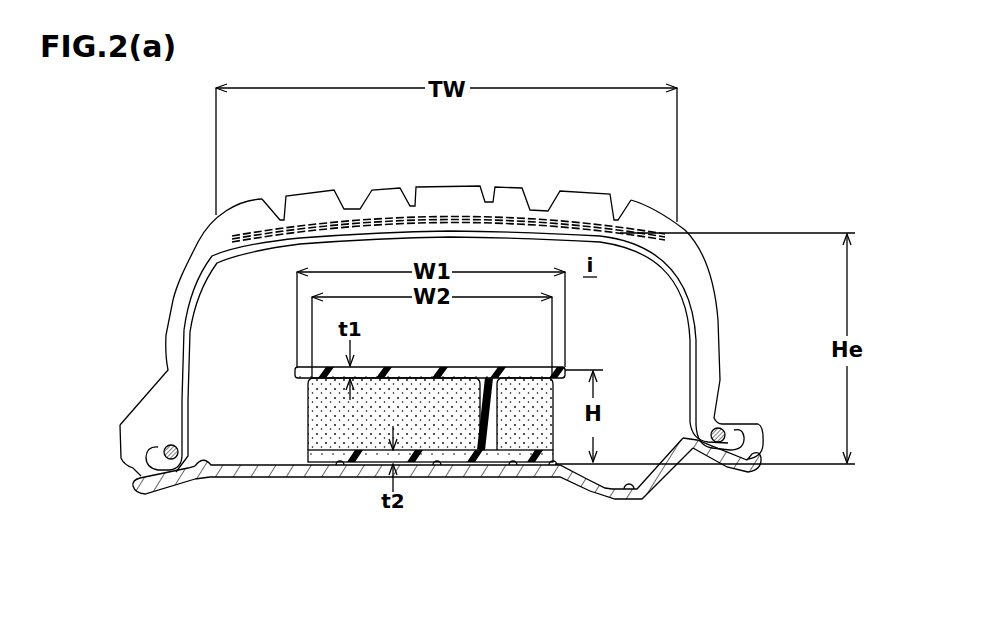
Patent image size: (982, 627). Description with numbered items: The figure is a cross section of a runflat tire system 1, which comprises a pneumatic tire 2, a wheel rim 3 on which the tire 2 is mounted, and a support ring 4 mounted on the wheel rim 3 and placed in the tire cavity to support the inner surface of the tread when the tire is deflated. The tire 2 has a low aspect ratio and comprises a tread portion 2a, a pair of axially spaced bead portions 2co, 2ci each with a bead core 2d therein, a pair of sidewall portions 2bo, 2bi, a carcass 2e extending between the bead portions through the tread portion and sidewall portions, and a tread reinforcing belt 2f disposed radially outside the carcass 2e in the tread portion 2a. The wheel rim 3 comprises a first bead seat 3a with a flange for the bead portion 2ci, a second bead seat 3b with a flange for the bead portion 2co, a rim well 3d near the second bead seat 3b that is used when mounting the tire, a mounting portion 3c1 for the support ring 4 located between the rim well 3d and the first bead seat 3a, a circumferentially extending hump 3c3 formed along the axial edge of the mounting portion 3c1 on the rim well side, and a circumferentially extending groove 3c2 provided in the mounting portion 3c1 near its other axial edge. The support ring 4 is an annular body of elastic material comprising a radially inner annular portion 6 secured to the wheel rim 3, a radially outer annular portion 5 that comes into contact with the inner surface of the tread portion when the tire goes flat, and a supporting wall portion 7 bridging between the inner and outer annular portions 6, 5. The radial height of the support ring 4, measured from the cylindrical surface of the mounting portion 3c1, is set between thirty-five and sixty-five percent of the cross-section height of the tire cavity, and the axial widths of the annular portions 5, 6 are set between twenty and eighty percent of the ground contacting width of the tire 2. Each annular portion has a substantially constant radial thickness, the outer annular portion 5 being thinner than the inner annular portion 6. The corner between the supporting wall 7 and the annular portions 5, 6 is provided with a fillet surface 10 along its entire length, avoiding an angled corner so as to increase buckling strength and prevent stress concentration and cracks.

The runflat tire system 1 is at (692, 213).
The pneumatic tire 2 is at (718, 222).
The tread portion 2a is at (455, 180).
The sidewall portion 2bi is at (162, 306).
The sidewall portion 2bo is at (736, 320).
The bead portion 2ci is at (115, 446).
The bead portion 2co is at (768, 431).
The bead core 2d is at (165, 446).
The carcass 2e is at (207, 272).
The tread reinforcing belt 2f is at (313, 232).
The wheel rim 3 is at (666, 486).
The first bead seat 3a is at (170, 496).
The second bead seat 3b is at (722, 476).
The mounting portion 3c1 is at (437, 464).
The circumferentially extending groove 3c2 is at (367, 465).
The circumferentially extending hump 3c3 is at (514, 464).
The rim well 3d is at (638, 500).
The support ring 4 is at (530, 362).
The radially outer annular portion 5 is at (478, 367).
The radially inner annular portion 6 is at (540, 462).
The supporting wall portion 7 is at (533, 413).
The fillet surface 10 is at (298, 382).